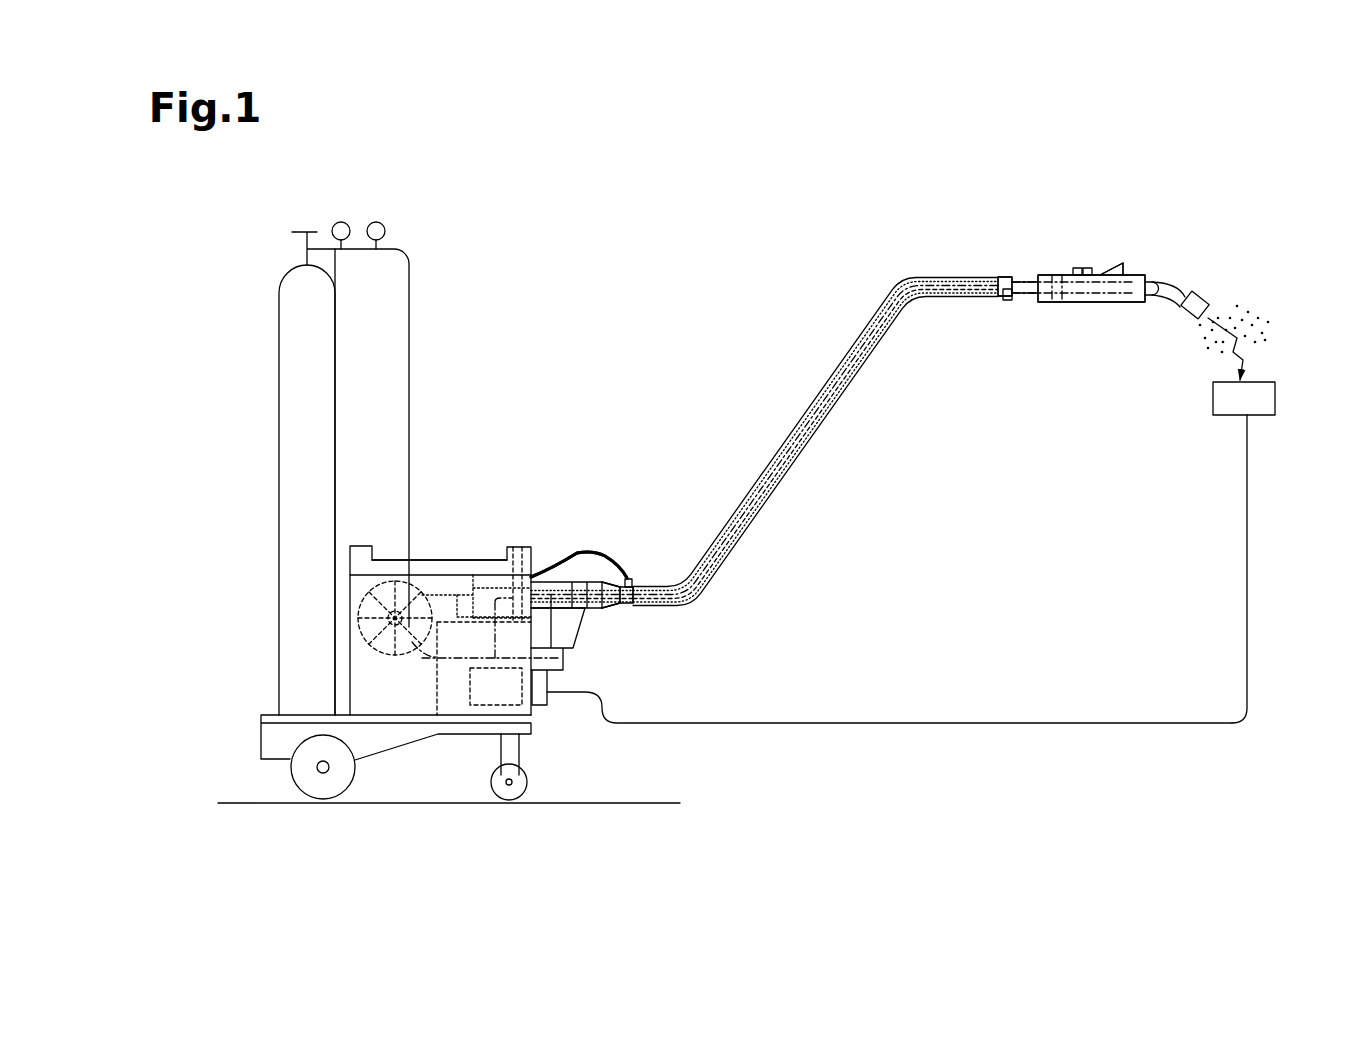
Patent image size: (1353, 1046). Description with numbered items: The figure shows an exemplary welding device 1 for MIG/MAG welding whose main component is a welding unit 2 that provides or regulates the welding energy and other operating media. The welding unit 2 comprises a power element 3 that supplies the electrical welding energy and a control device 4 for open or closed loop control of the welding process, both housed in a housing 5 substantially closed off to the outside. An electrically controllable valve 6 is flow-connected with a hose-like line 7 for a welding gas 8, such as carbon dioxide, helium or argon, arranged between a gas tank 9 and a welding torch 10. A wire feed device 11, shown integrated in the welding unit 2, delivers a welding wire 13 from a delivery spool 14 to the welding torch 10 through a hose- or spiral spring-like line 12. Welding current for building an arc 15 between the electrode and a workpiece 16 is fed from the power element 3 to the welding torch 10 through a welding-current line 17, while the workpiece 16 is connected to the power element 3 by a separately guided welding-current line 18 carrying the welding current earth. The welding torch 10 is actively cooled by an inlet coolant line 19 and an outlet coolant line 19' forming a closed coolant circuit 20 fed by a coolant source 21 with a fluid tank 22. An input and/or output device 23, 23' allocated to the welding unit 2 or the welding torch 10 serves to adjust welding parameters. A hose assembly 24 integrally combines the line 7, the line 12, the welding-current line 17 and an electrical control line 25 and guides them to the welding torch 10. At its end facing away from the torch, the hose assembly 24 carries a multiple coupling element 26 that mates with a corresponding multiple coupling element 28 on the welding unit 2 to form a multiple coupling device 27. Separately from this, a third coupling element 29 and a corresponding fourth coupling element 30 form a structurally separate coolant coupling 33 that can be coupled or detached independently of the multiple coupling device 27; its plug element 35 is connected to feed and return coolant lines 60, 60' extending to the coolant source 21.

The welding device 1 is at (238, 240).
The welding unit 2 is at (485, 436).
The power element 3 is at (490, 690).
The control device 4 is at (434, 682).
The housing 5 is at (425, 558).
The valve 6 is at (552, 663).
The hose-like line 7 is at (858, 336).
The welding gas 8 is at (1264, 306).
The gas tank 9 is at (300, 344).
The welding torch 10 is at (1133, 256).
The wire feed device 11 is at (350, 623).
The line 12 is at (765, 463).
The welding wire 13 is at (1224, 318).
The delivery spool 14 is at (362, 598).
The arc 15 is at (1216, 368).
The workpiece 16 is at (1255, 400).
The welding-current line 17 is at (766, 494).
The welding-current line 18 is at (1002, 720).
The inlet coolant line 19 is at (1060, 225).
The outlet coolant line 19' is at (1064, 349).
The coolant circuit 20 is at (1047, 274).
The coolant source 21 is at (492, 574).
The fluid tank 22 is at (512, 580).
The input and/or output device 23 is at (537, 524).
The input and/or output device 23' is at (1107, 196).
The hose assembly 24 is at (880, 282).
The electrical control line 25 is at (788, 430).
The multiple coupling element 26 is at (608, 606).
The multiple coupling device 27 is at (585, 559).
The multiple coupling element 28 is at (578, 585).
The coupling element 29 is at (642, 607).
The fourth coupling element 30 is at (650, 572).
The coolant coupling 33 is at (656, 577).
The plug element 35 is at (632, 566).
The coolant line 60 is at (577, 483).
The coolant line 60' is at (579, 565).